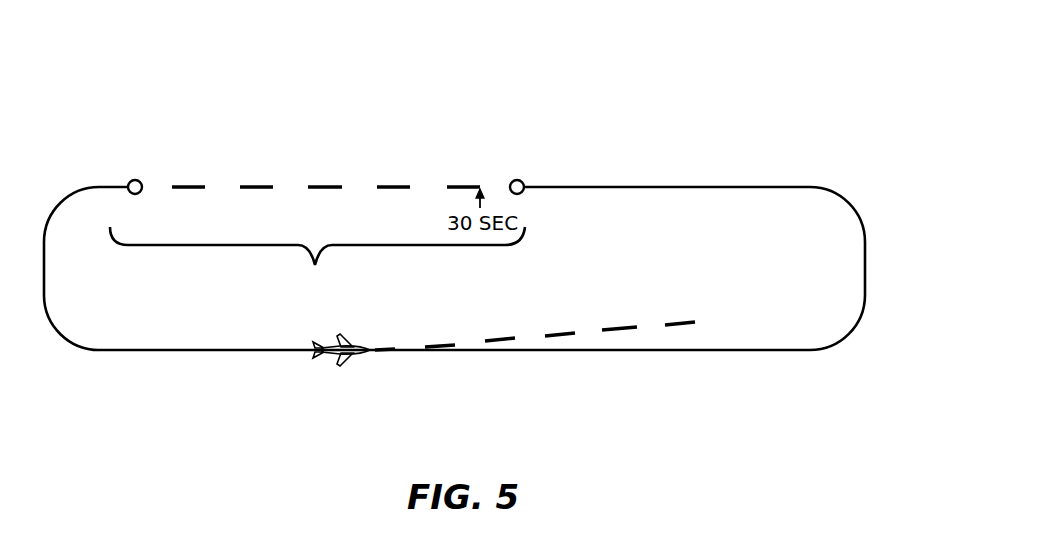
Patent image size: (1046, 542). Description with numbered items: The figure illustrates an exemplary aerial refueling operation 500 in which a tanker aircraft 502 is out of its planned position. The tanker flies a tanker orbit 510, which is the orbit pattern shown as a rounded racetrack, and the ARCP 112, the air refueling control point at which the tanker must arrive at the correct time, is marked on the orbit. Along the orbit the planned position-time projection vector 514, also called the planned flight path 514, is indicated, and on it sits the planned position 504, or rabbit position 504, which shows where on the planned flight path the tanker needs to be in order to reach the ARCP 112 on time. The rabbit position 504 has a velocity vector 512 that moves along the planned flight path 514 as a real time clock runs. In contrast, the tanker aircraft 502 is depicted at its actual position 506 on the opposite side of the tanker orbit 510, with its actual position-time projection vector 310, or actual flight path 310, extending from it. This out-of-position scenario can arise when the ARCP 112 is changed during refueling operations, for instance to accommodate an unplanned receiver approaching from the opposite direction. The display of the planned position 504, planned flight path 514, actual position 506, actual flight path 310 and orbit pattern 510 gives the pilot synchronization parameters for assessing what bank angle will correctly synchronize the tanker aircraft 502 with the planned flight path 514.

The approach procedure diagram 500 is at (770, 28).
The tanker orbit 510 is at (763, 186).
The ARCP 112 is at (139, 194).
The velocity vector 512 is at (395, 185).
The planned position 504 is at (514, 180).
The planned position-time projection vector 514 is at (317, 261).
The tanker aircraft 502 is at (355, 345).
The actual position 506 is at (335, 357).
The actual position-time projection vector 310 is at (678, 322).